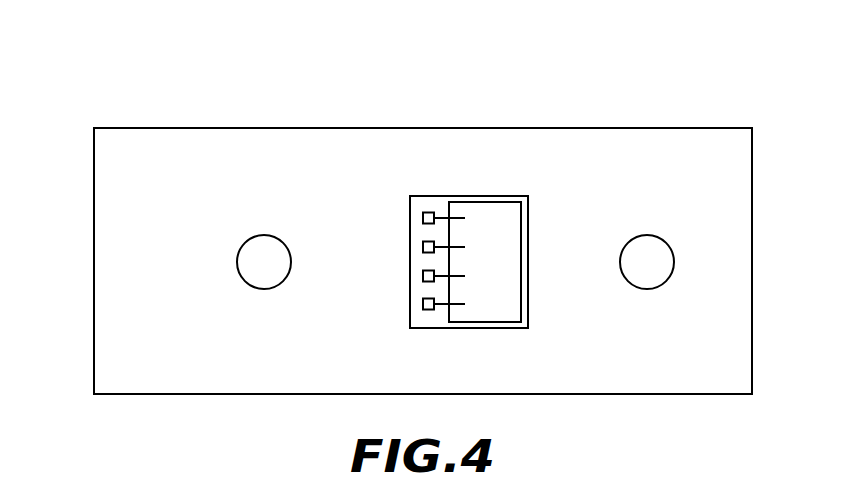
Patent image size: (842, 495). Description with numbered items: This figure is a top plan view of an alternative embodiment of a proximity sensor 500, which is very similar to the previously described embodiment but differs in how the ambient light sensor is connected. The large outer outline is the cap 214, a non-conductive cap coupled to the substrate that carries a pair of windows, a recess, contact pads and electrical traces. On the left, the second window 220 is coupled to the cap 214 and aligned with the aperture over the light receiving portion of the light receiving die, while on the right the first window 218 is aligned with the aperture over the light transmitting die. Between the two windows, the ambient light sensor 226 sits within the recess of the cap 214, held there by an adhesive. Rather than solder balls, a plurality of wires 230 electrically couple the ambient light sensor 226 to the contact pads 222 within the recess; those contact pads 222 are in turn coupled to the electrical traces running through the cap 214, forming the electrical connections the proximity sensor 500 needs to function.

The proximity sensor 500 is at (739, 61).
The cap 214 is at (113, 205).
The second window 220 is at (259, 253).
The first window 218 is at (651, 253).
The ambient light sensor 226 is at (493, 222).
The wires 230 is at (443, 217).
The contact pads 222 is at (429, 207).